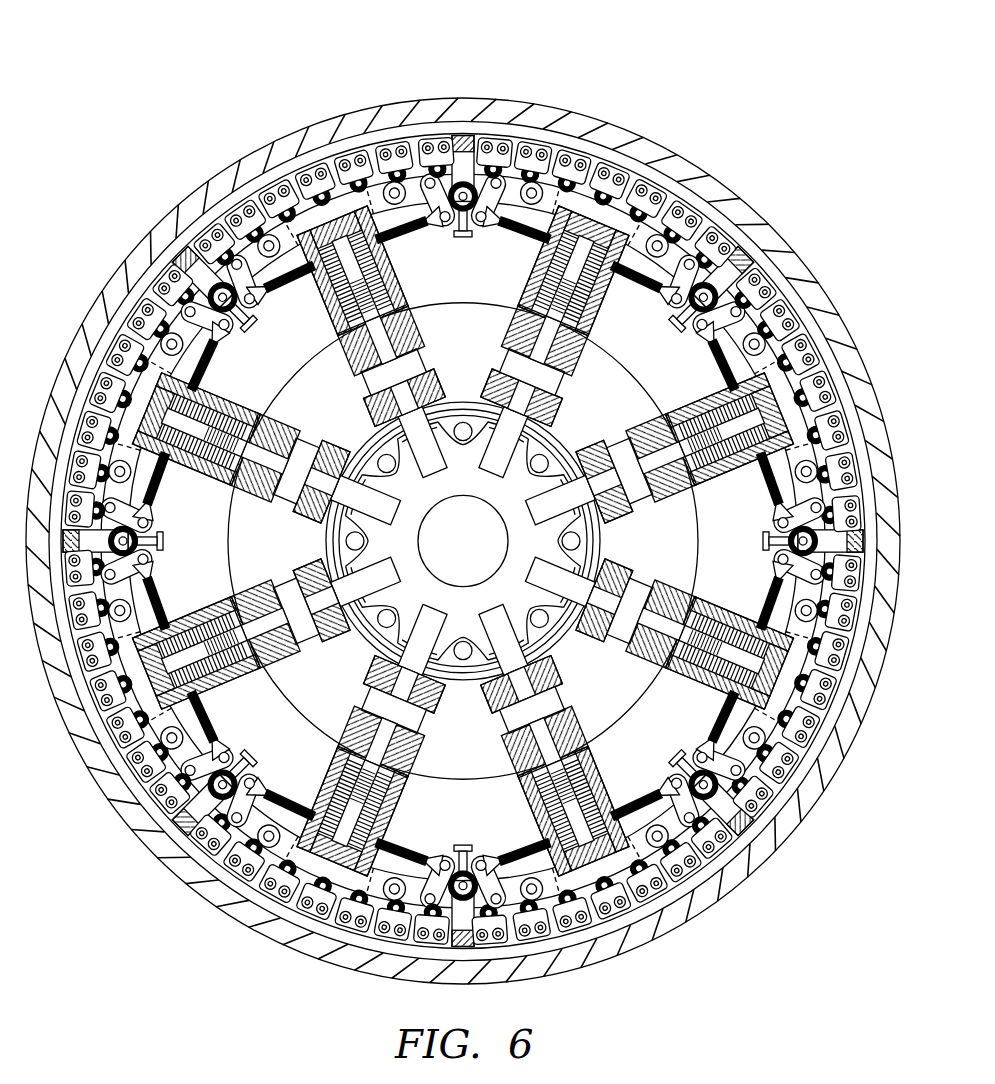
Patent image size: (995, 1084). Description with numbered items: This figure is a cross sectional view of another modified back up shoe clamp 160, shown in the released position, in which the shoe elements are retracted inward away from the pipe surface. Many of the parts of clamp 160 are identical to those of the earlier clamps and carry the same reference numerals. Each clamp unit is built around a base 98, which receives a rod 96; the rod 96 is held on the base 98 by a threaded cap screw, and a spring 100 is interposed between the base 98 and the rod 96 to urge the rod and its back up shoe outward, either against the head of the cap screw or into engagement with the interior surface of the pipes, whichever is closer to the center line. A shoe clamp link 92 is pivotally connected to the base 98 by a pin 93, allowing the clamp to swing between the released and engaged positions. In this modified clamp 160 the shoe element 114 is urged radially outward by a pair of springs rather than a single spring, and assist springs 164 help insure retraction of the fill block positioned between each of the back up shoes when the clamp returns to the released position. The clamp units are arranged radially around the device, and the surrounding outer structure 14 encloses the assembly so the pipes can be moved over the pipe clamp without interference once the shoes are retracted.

The outer housing ring 14 is at (520, 100).
The modified back up shoe clamp 160 is at (708, 110).
The shoe element 114 is at (707, 198).
The assist springs 164 is at (632, 293).
The shoe clamp link 92 is at (436, 468).
The pin 93 is at (416, 366).
The rod 96 is at (330, 300).
The base 98 is at (361, 360).
The spring 100 is at (381, 281).